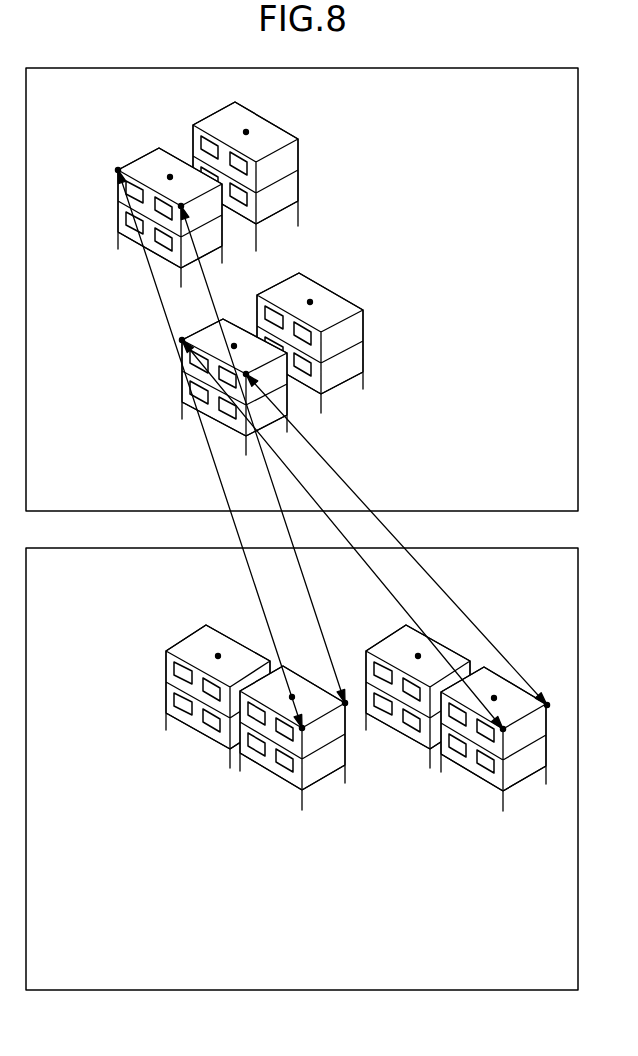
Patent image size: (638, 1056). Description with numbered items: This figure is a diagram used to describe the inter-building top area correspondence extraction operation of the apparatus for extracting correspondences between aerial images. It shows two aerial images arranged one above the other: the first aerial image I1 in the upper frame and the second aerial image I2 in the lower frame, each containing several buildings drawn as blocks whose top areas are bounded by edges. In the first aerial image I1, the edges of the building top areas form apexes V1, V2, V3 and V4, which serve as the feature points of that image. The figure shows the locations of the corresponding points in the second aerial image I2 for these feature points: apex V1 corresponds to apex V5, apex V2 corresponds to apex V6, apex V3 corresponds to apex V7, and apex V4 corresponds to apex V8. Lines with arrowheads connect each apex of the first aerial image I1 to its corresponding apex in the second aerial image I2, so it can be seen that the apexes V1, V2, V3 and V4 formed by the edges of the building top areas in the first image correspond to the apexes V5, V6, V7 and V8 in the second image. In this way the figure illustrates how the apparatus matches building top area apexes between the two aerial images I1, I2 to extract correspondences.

The apex V1 is at (118, 170).
The apex V2 is at (181, 206).
The apex V3 is at (182, 340).
The apex V4 is at (246, 374).
The apex V5 is at (302, 728).
The apex V6 is at (345, 703).
The apex V7 is at (503, 729).
The apex V8 is at (547, 705).
The aerial image 1 I1 is at (578, 290).
The aerial image 2 I2 is at (578, 770).